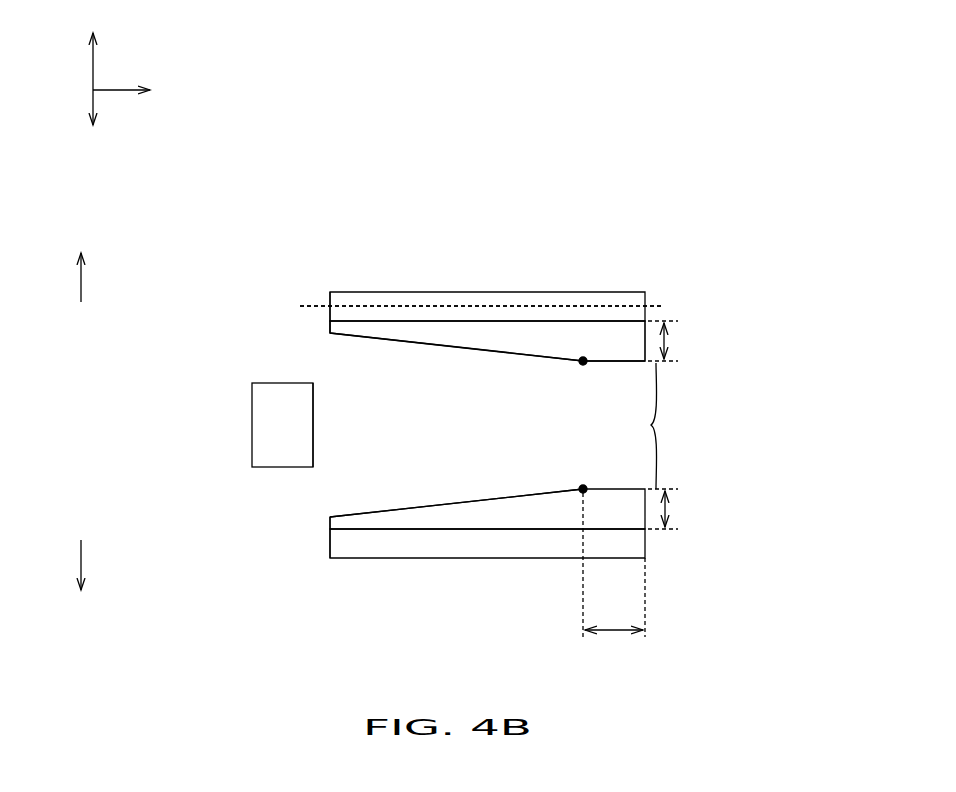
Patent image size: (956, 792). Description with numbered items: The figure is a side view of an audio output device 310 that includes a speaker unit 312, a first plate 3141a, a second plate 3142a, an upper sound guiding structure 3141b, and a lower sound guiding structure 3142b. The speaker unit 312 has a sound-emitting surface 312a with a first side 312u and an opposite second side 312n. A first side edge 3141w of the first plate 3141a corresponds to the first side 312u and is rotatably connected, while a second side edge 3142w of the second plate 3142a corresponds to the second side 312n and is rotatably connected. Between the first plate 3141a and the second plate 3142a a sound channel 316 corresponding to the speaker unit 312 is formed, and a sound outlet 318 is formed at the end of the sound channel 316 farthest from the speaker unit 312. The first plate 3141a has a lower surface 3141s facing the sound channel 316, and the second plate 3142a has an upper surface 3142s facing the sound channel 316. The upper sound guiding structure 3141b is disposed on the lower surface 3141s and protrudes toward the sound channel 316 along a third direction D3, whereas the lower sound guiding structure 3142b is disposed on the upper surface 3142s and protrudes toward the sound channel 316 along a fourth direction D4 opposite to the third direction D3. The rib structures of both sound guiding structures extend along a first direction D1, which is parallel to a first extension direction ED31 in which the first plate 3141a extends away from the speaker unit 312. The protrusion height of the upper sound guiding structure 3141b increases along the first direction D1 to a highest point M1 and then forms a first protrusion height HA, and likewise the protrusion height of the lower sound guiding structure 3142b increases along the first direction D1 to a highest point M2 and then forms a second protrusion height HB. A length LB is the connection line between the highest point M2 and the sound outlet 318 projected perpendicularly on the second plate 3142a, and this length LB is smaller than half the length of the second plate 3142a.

The audio output device 310 is at (817, 123).
The speaker unit 312 is at (278, 424).
The sound-emitting surface 312a is at (314, 400).
The first side 312u is at (83, 264).
The second side 312n is at (83, 579).
The first plate 3141a is at (631, 300).
The upper sound guiding structure 3141b is at (628, 329).
The first side edge 3141w is at (332, 298).
The lower surface 3141s is at (404, 324).
The second plate 3142a is at (602, 540).
The lower sound guiding structure 3142b is at (618, 508).
The second side edge 3142w is at (333, 545).
The upper surface 3142s is at (462, 528).
The sound channel 316 is at (500, 412).
The sound outlet 318 is at (681, 426).
The first extension direction ED31 is at (590, 305).
The highest point M1 is at (581, 375).
The highest point M2 is at (581, 474).
The first protrusion height HA is at (670, 341).
The second protrusion height HB is at (676, 509).
The length LB is at (614, 580).
The first direction D1 is at (139, 90).
The third direction D3 is at (93, 121).
The fourth direction D4 is at (93, 46).